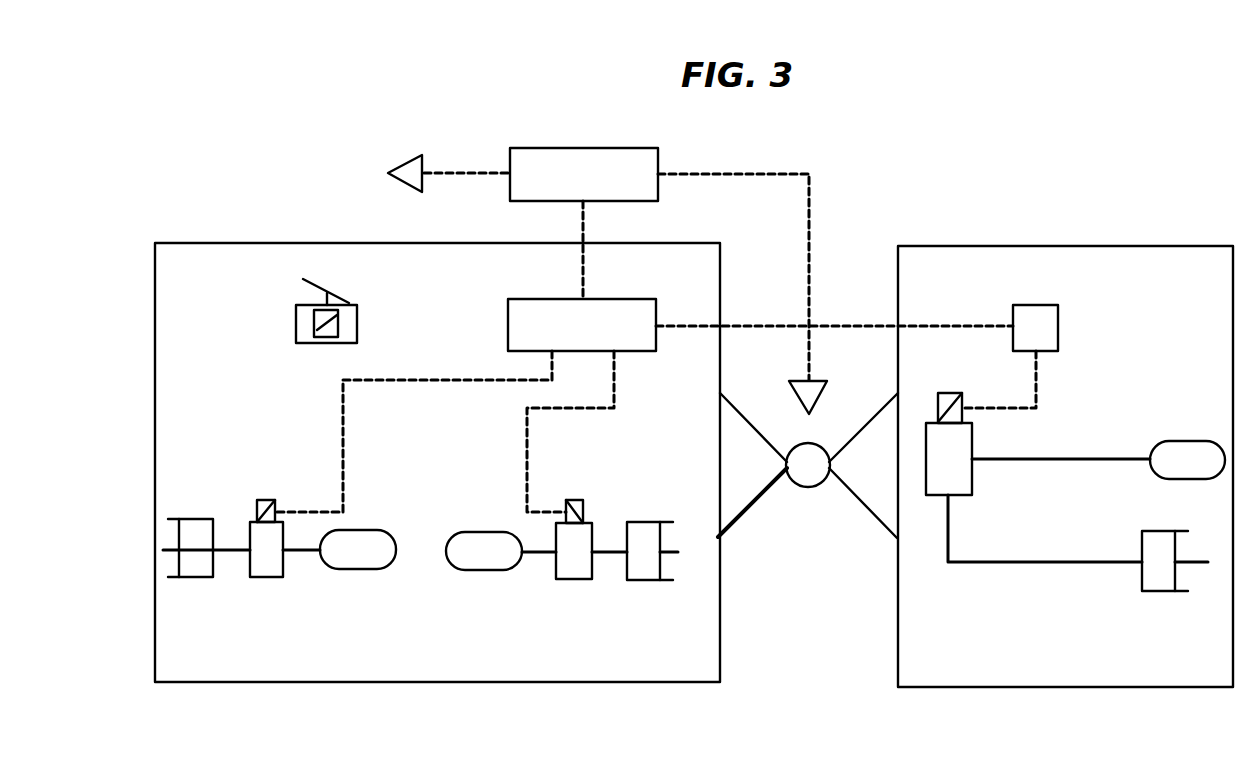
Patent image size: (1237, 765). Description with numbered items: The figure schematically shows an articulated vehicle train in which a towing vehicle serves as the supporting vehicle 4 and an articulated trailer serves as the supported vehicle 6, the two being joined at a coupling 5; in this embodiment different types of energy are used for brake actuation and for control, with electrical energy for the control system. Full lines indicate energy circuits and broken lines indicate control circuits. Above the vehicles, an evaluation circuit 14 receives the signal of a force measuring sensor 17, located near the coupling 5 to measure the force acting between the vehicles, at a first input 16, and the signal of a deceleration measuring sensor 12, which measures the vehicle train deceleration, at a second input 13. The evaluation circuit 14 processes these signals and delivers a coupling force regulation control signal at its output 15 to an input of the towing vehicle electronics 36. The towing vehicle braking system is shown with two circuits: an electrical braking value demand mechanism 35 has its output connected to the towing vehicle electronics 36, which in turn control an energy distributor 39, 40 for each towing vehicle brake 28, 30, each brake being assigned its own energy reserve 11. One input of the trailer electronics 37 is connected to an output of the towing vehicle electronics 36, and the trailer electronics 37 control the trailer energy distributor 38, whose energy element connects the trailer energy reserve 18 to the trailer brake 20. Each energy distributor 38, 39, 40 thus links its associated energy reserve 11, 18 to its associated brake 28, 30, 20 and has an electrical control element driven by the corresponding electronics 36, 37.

The supporting vehicle 4 is at (162, 282).
The supported vehicle 6 is at (1173, 257).
The coupling 5 is at (800, 452).
The energy reserve 11 is at (358, 562).
The deceleration measuring sensor 12 is at (395, 167).
The second input 13 is at (510, 170).
The evaluation circuit 14 is at (584, 156).
The output 15 is at (592, 203).
The first input 16 is at (658, 171).
The force measuring sensor 17 is at (821, 393).
The trailer energy reserve 18 is at (1197, 450).
The trailer brake 20 is at (1153, 540).
The towing vehicle brake 28 is at (645, 572).
The towing vehicle brake 30 is at (198, 577).
The electrical braking value demand mechanism 35 is at (305, 313).
The towing vehicle electronics 36 is at (510, 325).
The trailer electronics 37 is at (1050, 313).
The energy distributor 38 is at (962, 447).
The energy distributor 39 is at (568, 572).
The energy distributor 40 is at (265, 567).